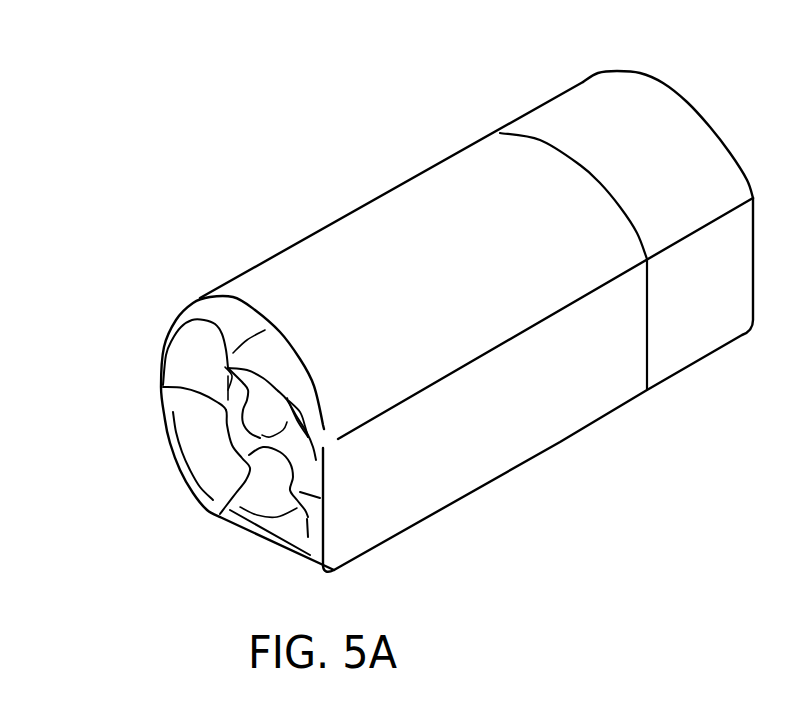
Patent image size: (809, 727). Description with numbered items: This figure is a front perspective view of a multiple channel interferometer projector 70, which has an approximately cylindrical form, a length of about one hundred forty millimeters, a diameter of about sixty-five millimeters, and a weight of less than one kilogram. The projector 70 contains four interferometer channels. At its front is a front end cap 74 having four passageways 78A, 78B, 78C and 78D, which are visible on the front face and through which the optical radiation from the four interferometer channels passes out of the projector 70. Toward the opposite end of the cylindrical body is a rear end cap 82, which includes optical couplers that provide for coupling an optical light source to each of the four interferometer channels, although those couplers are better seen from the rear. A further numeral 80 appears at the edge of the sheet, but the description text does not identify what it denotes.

The multiple channel interferometer projector 70 is at (393, 132).
The front end cap 74 is at (197, 310).
The passageway 78A is at (180, 348).
The passageway 78B is at (188, 445).
The passageway 78C is at (293, 415).
The passageway 78D is at (292, 528).
The rear end cap 82 is at (602, 90).
The flat surface 80 is at (803, 394).